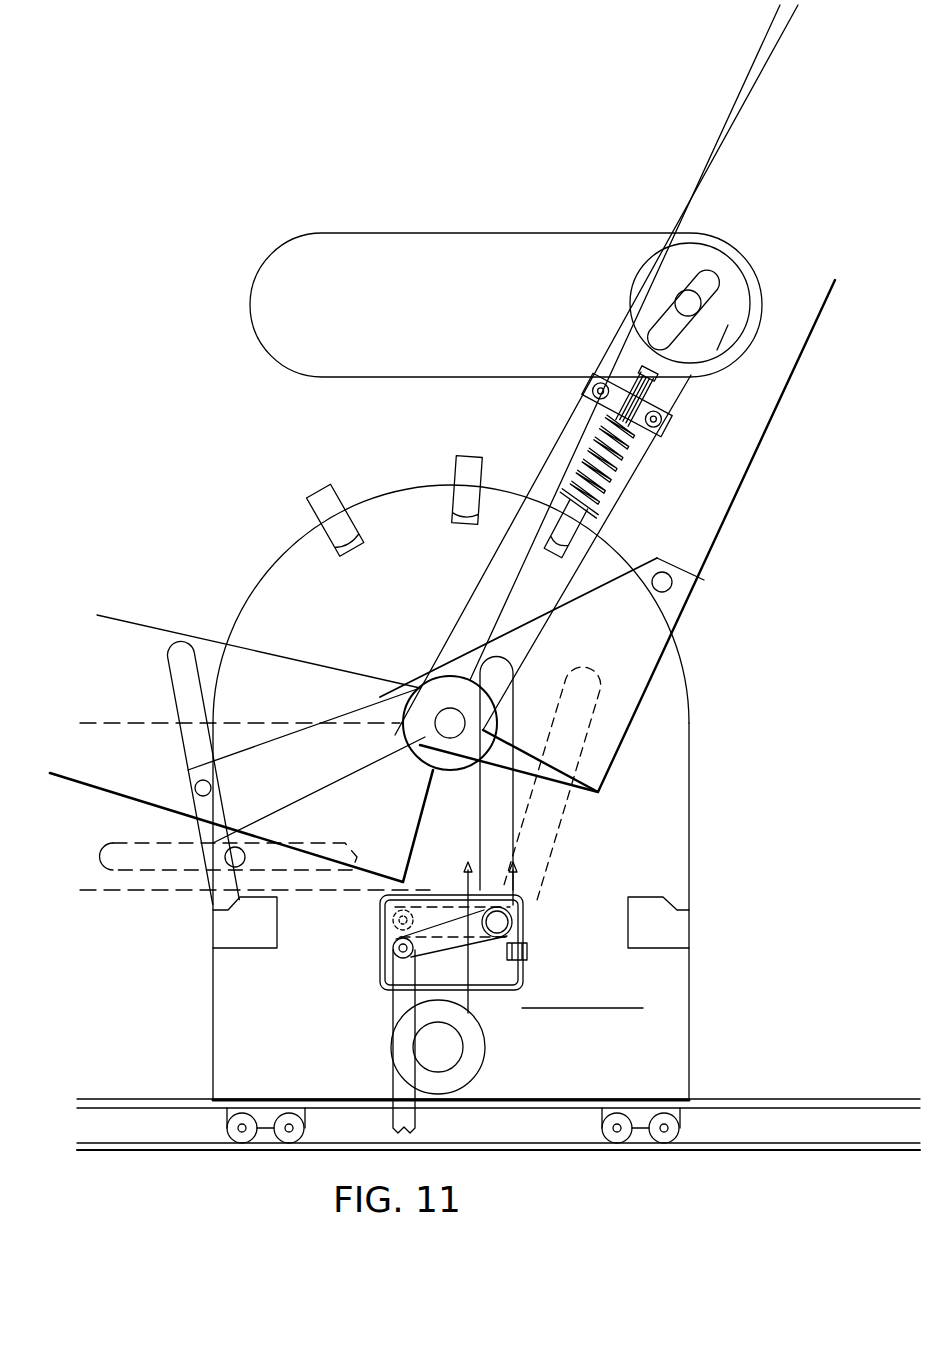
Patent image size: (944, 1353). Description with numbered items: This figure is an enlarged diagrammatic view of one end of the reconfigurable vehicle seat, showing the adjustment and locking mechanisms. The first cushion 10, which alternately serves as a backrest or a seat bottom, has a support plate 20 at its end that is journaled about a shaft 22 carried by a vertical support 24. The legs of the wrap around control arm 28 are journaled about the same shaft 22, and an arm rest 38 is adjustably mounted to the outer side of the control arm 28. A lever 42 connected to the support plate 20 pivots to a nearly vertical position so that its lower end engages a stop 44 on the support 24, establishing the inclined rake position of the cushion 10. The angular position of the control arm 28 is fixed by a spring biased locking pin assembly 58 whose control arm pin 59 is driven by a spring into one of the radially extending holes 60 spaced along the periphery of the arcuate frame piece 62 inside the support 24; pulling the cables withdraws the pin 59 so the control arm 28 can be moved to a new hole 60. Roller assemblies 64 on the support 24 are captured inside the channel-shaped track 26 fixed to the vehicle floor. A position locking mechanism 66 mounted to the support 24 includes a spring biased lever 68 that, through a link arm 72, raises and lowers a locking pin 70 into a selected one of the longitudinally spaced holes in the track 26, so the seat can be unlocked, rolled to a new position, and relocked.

The first cushion 10 is at (128, 667).
The support plate 20 is at (692, 582).
The shaft 22 is at (440, 712).
The vertical support 24 is at (692, 862).
The track 26 is at (468, 1132).
The control arm 28 is at (792, 197).
The arm rest 38 is at (485, 250).
The lever 42 is at (180, 692).
The stop 44 is at (237, 955).
The spring biased locking pin assembly 58 is at (632, 460).
The control arm pin 59 is at (580, 510).
The hole 60 is at (543, 552).
The arcuate frame piece 62 is at (420, 569).
The roller assembly 64 is at (219, 1131).
The position locking mechanism 66 is at (497, 1005).
The lever 68 is at (500, 672).
The locking pin 70 is at (393, 1000).
The link arm 72 is at (440, 905).